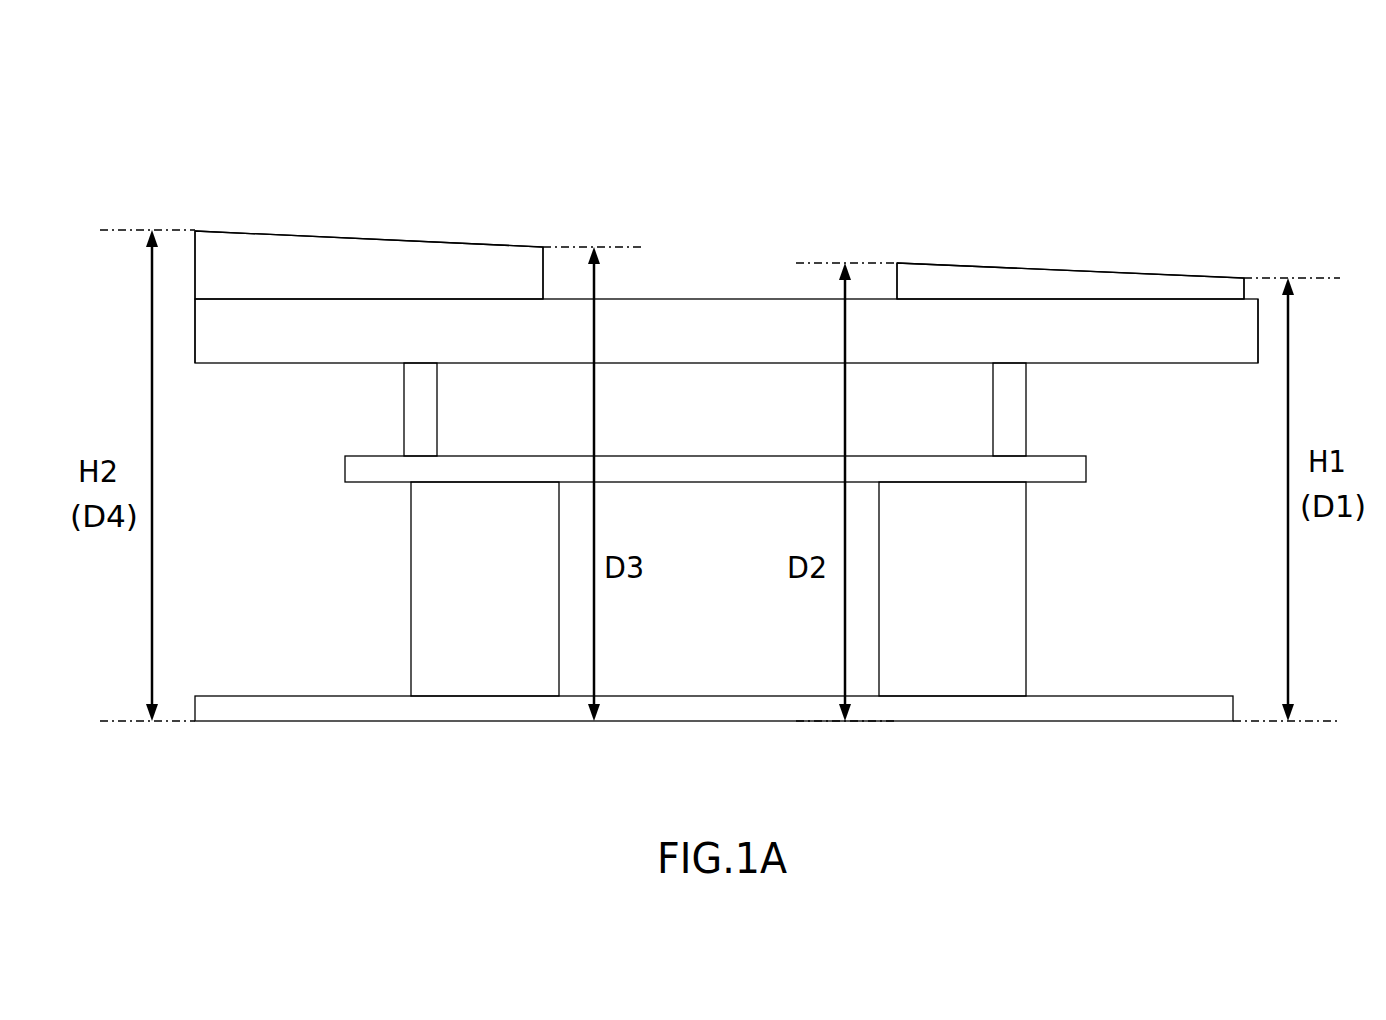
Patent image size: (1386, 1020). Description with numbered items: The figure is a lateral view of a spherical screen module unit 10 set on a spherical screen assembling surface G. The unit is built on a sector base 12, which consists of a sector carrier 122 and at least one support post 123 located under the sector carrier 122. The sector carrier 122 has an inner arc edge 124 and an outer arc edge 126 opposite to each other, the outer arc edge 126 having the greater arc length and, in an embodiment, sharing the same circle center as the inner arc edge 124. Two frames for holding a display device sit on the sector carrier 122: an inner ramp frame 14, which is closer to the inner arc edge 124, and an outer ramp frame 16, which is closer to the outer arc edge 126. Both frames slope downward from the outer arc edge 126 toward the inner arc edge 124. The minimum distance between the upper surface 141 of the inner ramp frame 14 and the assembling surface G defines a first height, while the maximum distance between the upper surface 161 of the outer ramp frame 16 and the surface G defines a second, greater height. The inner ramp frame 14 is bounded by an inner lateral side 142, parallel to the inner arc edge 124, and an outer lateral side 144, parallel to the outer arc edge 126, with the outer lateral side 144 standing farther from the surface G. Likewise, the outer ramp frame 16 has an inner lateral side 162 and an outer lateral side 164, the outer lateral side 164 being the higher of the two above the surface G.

The spherical screen module unit 10 is at (176, 100).
The sector base 12 is at (1245, 565).
The sector carrier 122 is at (1177, 342).
The support post 123 is at (982, 548).
The inner arc edge 124 is at (1258, 326).
The outer arc edge 126 is at (192, 341).
The inner ramp frame 14 is at (1030, 186).
The upper surface of the inner ramp frame 141 is at (1066, 270).
The inner lateral side of the inner ramp frame 142 is at (1244, 278).
The outer lateral side of the inner ramp frame 144 is at (897, 263).
The outer ramp frame 16 is at (305, 190).
The upper surface of the outer ramp frame 161 is at (382, 239).
The inner lateral side of the outer ramp frame 162 is at (543, 247).
The outer lateral side of the outer ramp frame 164 is at (197, 230).
The spherical screen assembling surface G is at (1240, 722).